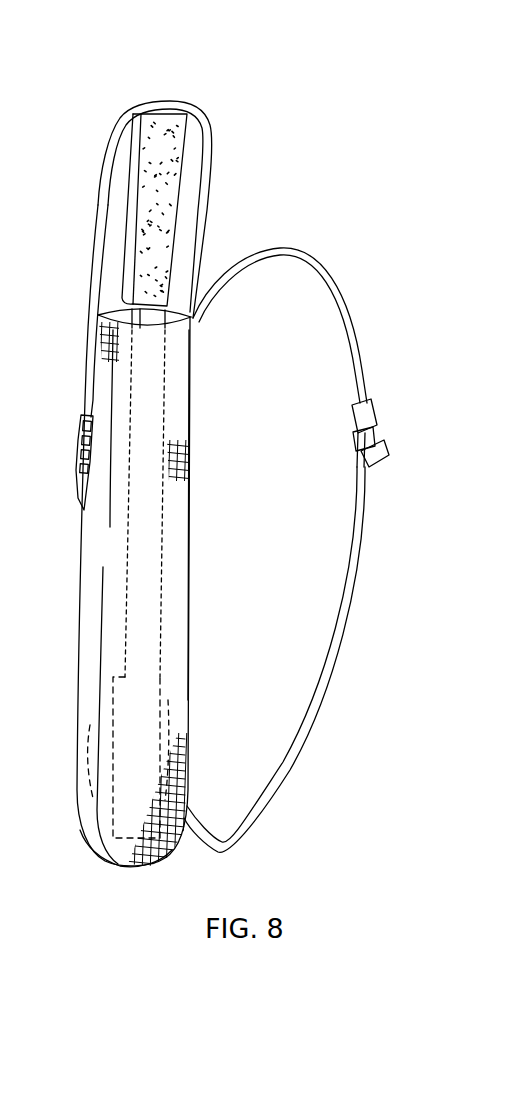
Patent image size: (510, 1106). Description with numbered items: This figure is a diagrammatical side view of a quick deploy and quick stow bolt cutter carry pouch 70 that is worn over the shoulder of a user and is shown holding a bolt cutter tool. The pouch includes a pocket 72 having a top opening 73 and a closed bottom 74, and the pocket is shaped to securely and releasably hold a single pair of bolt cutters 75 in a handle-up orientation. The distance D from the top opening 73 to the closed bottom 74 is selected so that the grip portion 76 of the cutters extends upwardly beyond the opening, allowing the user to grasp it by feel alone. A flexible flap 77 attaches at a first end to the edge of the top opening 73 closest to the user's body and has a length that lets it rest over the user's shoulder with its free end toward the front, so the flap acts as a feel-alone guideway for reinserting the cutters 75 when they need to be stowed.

The bolt cutter carry pouch 70 is at (188, 507).
The pocket 72 is at (109, 299).
The top opening 73 is at (175, 328).
The closed bottom 74 is at (108, 862).
The bolt cutters 75 is at (185, 560).
The grip portion 76 is at (167, 153).
The flexible flap 77 is at (113, 132).